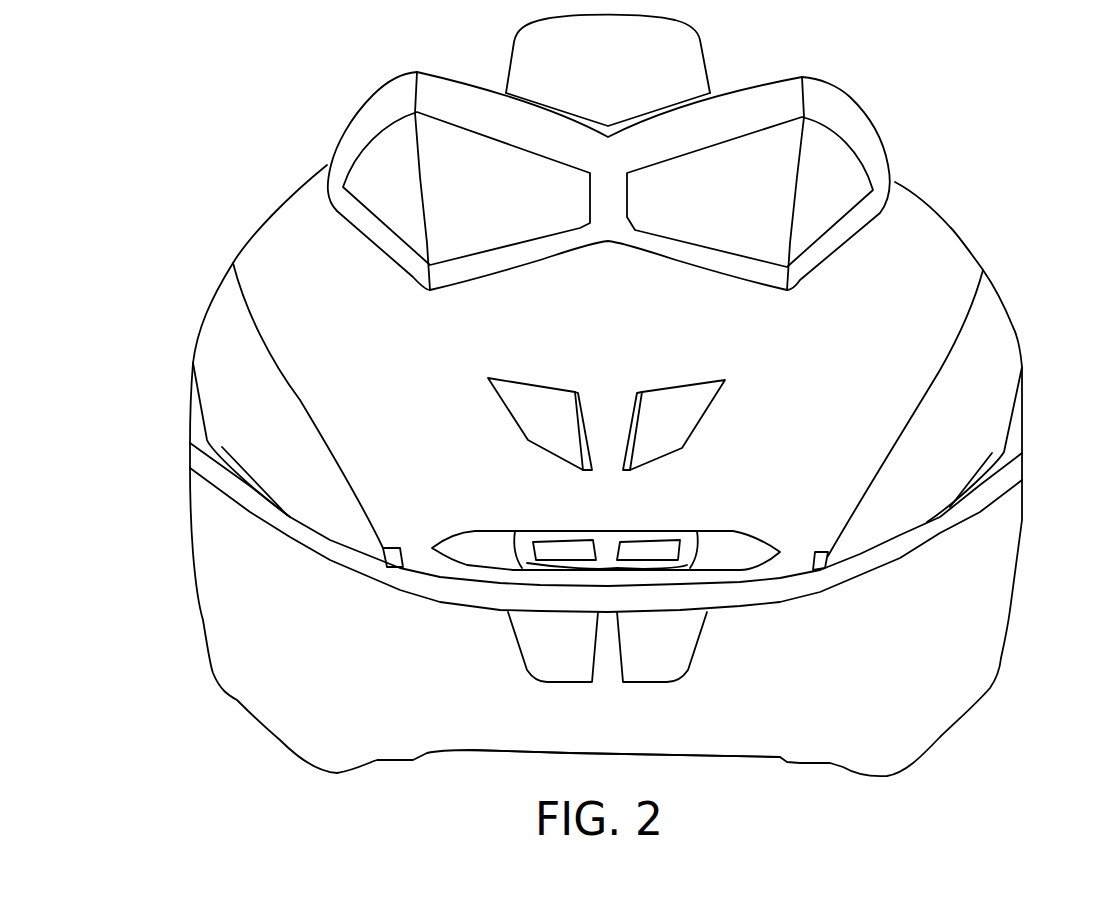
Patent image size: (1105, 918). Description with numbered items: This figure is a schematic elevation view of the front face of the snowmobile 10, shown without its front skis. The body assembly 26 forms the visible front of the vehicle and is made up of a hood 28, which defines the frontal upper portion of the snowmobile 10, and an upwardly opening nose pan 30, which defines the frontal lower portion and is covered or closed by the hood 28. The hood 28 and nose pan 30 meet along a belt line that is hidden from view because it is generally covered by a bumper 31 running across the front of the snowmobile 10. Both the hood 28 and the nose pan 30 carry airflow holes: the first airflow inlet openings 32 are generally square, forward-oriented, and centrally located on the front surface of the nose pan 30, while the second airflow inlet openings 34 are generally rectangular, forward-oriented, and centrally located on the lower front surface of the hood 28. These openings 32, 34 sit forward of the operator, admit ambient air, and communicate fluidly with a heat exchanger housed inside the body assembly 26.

The snowmobile 10 is at (243, 140).
The body assembly 26 is at (1000, 279).
The hood 28 is at (1003, 337).
The nose pan 30 is at (742, 742).
The bumper 31 is at (1023, 467).
The first airflow inlet openings 32 is at (532, 648).
The second airflow inlet openings 34 is at (550, 545).